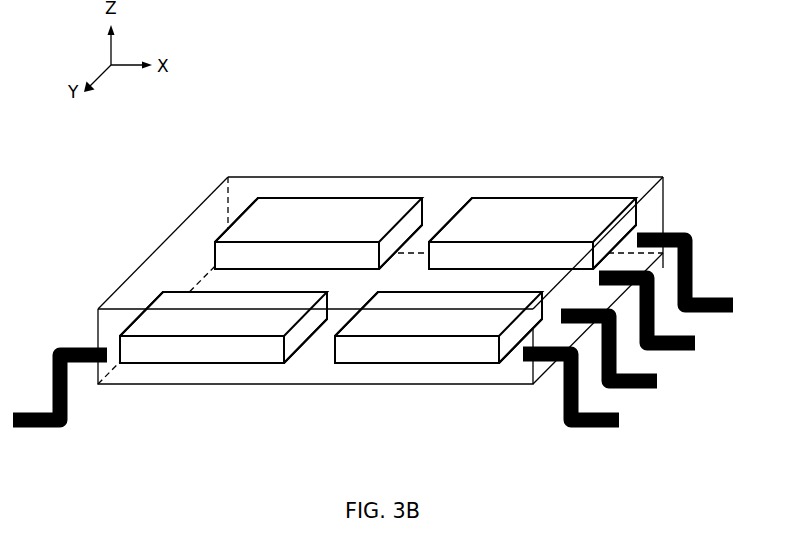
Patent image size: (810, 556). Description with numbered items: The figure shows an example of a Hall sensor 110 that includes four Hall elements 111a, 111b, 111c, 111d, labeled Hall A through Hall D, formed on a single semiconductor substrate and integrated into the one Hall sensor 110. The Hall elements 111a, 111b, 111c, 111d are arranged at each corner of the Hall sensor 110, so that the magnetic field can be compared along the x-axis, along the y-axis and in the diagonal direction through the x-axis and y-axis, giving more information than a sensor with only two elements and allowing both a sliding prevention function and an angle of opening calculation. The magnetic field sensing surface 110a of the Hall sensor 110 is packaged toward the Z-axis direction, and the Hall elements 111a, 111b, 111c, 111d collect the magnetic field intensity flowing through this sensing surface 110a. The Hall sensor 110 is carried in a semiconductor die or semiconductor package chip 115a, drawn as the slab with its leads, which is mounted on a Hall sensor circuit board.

The Hall sensor 110 is at (646, 84).
The magnetic field sensing surface 110a is at (450, 191).
The semiconductor package chip 115a is at (168, 239).
The Hall element 111a is at (417, 363).
The Hall element 111b is at (203, 363).
The Hall element 111c is at (342, 191).
The Hall element 111d is at (556, 191).